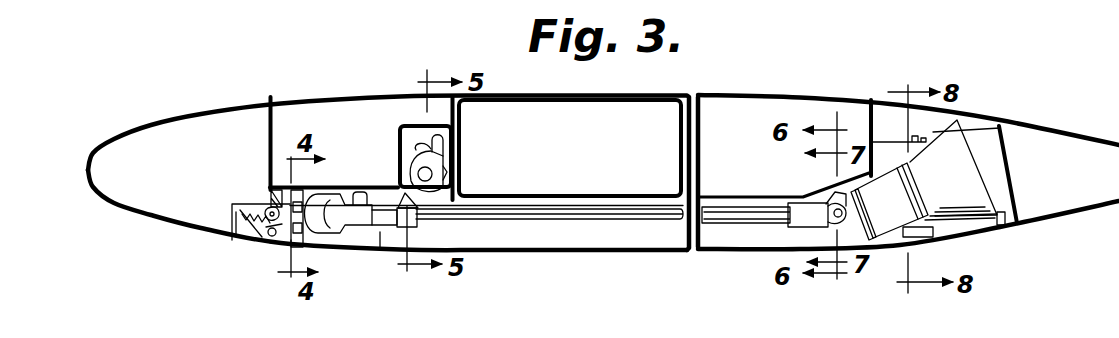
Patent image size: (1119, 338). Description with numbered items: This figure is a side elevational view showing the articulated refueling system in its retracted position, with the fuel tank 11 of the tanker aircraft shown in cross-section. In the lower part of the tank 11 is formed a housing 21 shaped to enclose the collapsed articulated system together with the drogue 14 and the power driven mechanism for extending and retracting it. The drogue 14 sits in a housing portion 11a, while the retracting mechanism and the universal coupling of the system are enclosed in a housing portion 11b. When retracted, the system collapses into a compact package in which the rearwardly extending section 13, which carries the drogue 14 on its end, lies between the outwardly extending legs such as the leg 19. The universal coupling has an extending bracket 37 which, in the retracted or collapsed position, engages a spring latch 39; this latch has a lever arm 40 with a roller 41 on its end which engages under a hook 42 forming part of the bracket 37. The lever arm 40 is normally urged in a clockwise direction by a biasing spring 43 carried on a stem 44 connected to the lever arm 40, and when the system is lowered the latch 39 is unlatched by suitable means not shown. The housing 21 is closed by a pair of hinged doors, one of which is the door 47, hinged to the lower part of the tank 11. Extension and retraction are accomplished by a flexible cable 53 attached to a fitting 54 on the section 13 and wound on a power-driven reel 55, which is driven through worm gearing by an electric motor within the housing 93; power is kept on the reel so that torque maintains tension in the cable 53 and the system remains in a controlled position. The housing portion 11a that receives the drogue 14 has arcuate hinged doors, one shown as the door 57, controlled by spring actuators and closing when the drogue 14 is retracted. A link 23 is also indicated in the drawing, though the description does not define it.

The fuel tank 11 is at (758, 94).
The housing portion 11a is at (1016, 179).
The housing portion 11b is at (341, 180).
The rearwardly extending section 13 is at (527, 211).
The drogue 14 is at (988, 228).
The leg 19 is at (764, 224).
The housing 21 is at (580, 197).
The link 23 is at (834, 193).
The extending bracket 37 is at (313, 238).
The spring latch 39 is at (246, 249).
The lever arm 40 is at (282, 229).
The roller 41 is at (287, 229).
The hook 42 is at (276, 210).
The biasing spring 43 is at (268, 209).
The stem 44 is at (242, 247).
The door 47 is at (381, 250).
The flexible cable 53 is at (417, 183).
The fitting 54 is at (417, 209).
The power-driven reel 55 is at (449, 180).
The arcuate hinged door 57 is at (965, 238).
The motor housing 93 is at (448, 143).